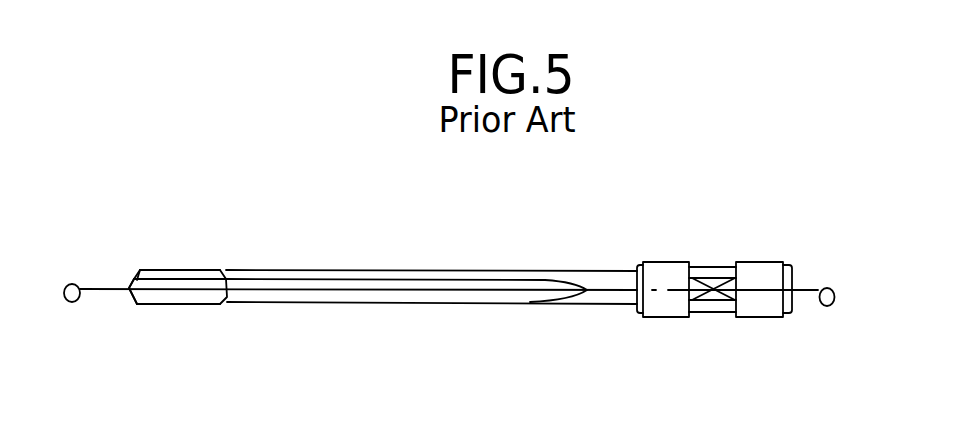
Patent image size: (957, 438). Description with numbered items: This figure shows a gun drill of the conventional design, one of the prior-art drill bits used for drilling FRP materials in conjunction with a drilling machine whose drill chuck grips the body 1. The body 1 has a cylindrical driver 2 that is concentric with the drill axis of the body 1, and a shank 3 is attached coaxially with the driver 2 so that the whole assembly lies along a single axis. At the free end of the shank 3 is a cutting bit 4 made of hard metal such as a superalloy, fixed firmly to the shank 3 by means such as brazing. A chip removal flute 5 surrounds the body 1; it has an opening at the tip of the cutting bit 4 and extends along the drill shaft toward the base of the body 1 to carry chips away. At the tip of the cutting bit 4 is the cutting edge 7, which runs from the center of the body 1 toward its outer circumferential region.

The body 1 is at (665, 240).
The cylindrical driver 2 is at (753, 277).
The shank 3 is at (497, 280).
The cutting bit 4 is at (182, 270).
The chip removal flute 5 is at (304, 303).
The cutting edge 7 is at (132, 303).